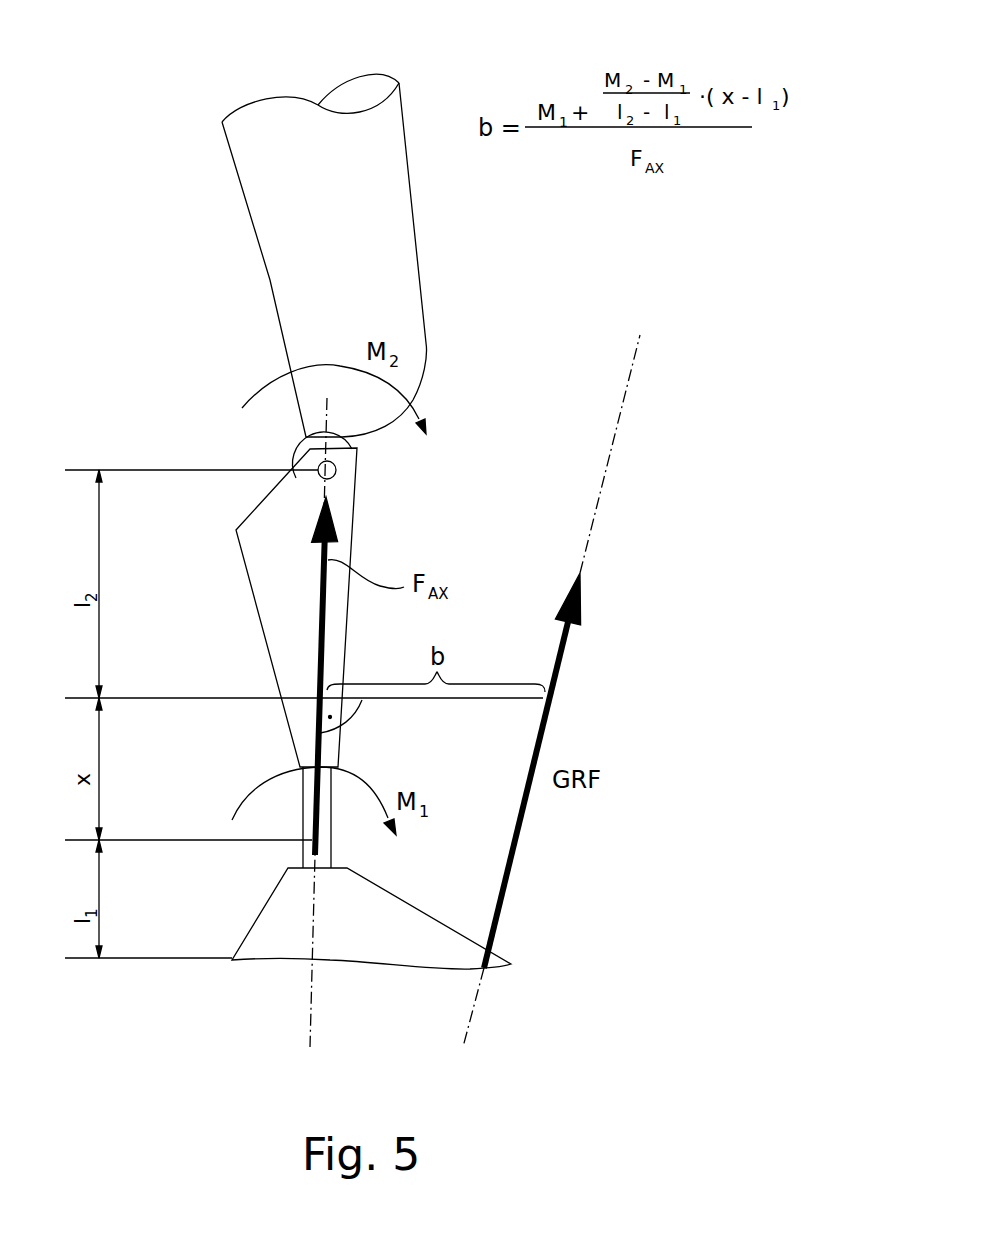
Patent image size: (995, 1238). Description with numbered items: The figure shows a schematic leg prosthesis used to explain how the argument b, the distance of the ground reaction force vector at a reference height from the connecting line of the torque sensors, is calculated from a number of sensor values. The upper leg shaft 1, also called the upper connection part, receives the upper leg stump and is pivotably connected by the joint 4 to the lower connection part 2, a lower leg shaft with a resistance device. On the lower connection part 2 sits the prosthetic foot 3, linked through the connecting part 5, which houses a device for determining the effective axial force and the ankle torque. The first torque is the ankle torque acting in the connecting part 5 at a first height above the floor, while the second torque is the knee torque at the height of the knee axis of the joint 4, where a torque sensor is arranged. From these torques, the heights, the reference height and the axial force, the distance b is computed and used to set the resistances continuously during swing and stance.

The upper leg shaft 1 is at (395, 217).
The lower connection part 2 is at (265, 575).
The prosthetic foot 3 is at (409, 930).
The joint 4 is at (310, 449).
The connecting part 5 is at (307, 860).